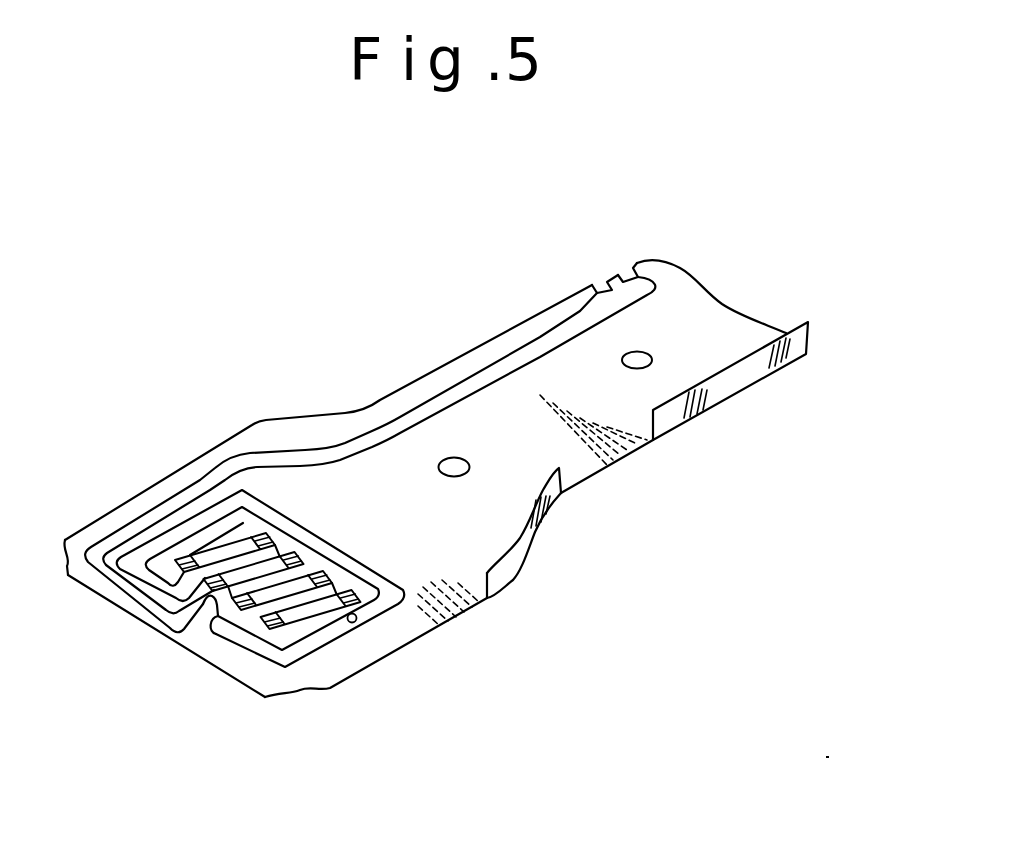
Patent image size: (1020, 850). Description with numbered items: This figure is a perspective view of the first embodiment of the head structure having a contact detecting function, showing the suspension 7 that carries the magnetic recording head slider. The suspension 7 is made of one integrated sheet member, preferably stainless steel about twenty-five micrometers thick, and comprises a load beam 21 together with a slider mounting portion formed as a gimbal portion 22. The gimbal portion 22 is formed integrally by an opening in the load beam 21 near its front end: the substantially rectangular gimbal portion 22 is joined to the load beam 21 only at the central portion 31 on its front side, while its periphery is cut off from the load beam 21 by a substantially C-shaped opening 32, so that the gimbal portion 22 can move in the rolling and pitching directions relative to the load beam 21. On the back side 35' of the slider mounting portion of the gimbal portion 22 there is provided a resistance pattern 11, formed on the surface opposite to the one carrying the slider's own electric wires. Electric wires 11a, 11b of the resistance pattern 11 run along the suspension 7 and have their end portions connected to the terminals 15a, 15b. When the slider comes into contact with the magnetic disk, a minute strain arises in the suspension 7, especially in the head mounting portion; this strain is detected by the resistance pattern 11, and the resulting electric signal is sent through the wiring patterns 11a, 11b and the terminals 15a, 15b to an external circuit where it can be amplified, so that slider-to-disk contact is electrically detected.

The suspension 7 is at (420, 356).
The load beam 21 is at (512, 329).
The terminal 15a is at (592, 284).
The terminal 15b is at (621, 273).
The electric wire 11a is at (292, 448).
The electric wire 11b is at (343, 458).
The back side of the slider mounting portion 35' is at (194, 476).
The central portion 31 is at (208, 621).
The resistance pattern 11 is at (302, 605).
The gimbal portion 22 is at (358, 623).
The C-shaped opening 32 is at (422, 633).